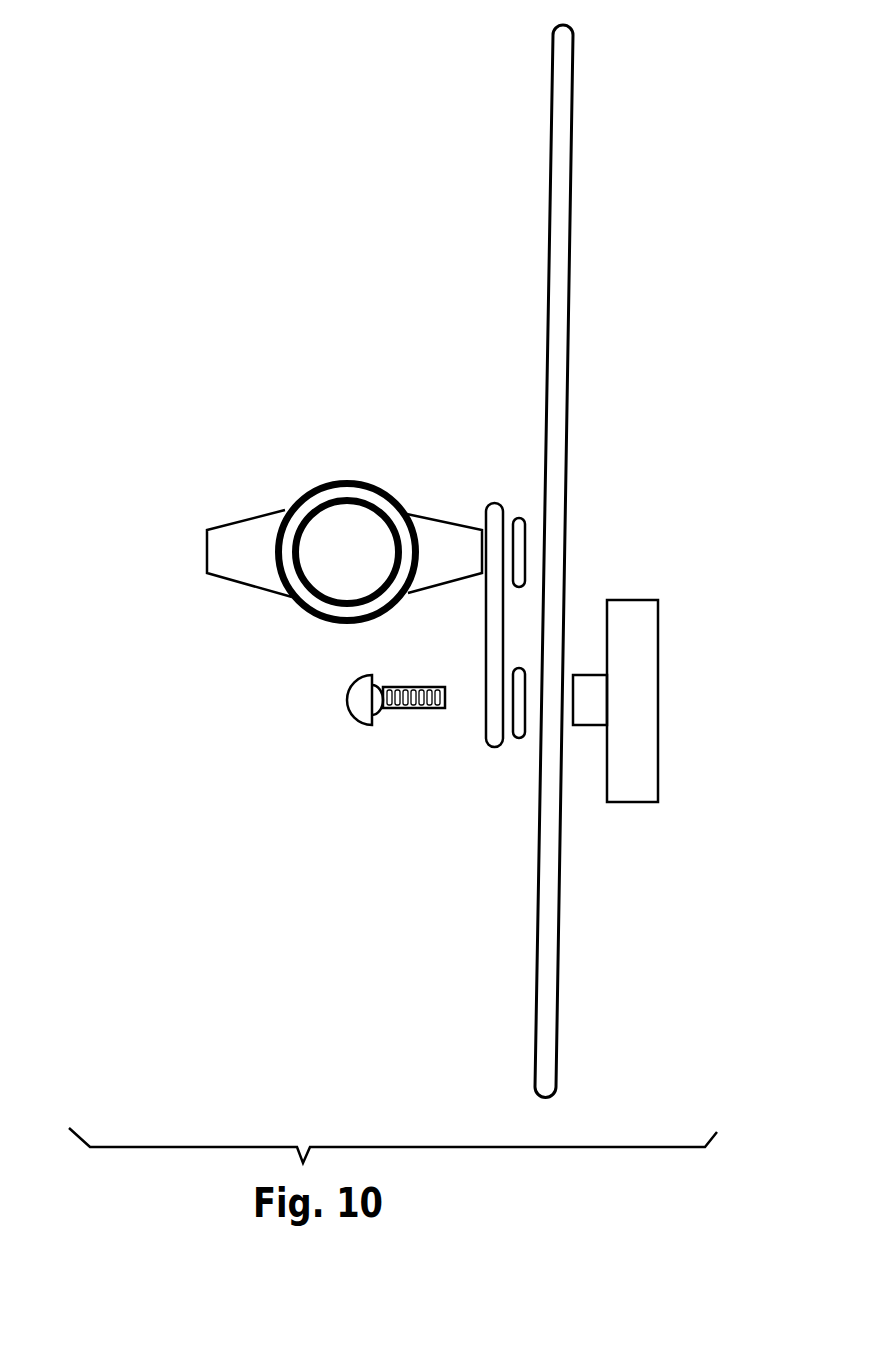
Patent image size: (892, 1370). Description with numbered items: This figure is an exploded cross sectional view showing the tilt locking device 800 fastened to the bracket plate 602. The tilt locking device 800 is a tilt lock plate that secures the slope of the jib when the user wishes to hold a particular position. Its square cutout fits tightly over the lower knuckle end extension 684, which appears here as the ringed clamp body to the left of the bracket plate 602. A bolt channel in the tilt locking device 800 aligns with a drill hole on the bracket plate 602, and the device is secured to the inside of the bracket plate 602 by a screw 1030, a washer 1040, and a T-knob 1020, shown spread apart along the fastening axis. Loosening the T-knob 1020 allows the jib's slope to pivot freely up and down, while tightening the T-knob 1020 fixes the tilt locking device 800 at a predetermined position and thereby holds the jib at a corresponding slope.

The bracket plate 602 is at (522, 121).
The lower knuckle end extension 684 is at (437, 475).
The tilt locking device 800 is at (465, 759).
The washer 1040 is at (522, 782).
The T-knob 1020 is at (637, 550).
The screw 1030 is at (336, 746).